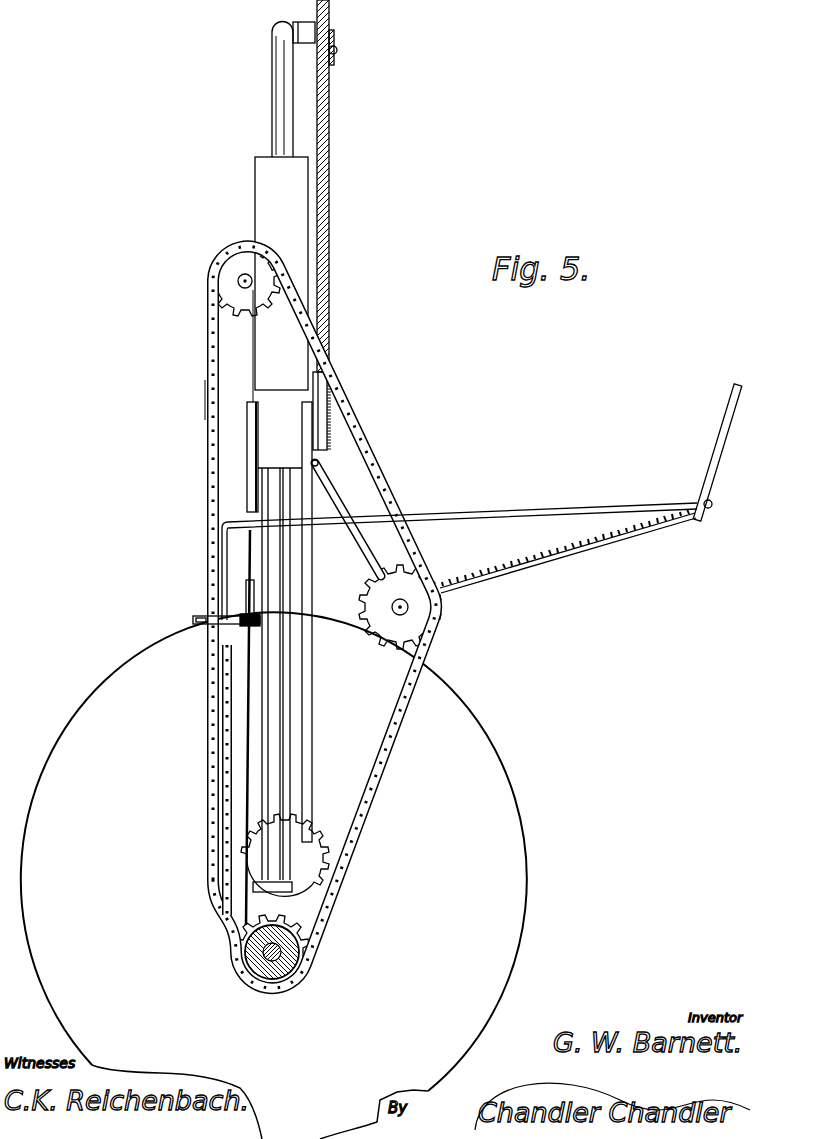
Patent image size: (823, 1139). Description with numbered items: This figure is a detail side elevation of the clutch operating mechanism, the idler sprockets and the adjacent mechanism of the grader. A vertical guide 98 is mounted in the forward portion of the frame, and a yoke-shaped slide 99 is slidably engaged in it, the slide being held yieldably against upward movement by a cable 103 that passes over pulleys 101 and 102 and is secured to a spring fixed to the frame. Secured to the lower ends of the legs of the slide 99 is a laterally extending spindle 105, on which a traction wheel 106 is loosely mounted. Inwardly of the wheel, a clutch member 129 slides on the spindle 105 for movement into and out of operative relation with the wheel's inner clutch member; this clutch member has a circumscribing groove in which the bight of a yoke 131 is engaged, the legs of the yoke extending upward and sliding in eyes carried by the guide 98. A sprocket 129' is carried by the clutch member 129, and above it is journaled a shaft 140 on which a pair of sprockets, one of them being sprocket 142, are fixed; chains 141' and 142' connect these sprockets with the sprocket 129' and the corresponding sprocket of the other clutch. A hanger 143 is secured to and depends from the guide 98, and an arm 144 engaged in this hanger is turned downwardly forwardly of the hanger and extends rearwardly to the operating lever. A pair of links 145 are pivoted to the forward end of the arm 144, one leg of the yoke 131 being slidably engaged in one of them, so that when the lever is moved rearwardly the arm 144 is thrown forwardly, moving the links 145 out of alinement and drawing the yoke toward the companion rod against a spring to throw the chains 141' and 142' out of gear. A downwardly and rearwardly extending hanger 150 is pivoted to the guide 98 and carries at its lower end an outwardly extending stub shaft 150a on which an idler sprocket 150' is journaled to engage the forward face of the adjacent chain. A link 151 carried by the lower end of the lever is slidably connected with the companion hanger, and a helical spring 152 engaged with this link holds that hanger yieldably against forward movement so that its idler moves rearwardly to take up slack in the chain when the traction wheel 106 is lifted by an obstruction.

The vertical guide 98 is at (292, 346).
The yoke-shaped slide 99 is at (285, 140).
The pulley 101 is at (334, 56).
The pulley 102 is at (330, 422).
The cable 103 is at (328, 252).
The spindle 105 is at (292, 896).
The traction wheel 106 is at (511, 848).
The clutch member 129 is at (320, 873).
The sprocket 129' is at (301, 840).
The yoke 131 is at (242, 718).
The shaft 140 is at (238, 283).
The chain 141' is at (284, 617).
The sprocket 142 is at (219, 298).
The chain 142' is at (180, 647).
The hanger 143 is at (247, 504).
The arm 144 is at (462, 508).
The links 145 is at (235, 618).
The hanger 150 is at (346, 519).
The stub shaft 150a is at (408, 607).
The idler sprocket 150' is at (424, 613).
The link 151 is at (600, 530).
The helical spring 152 is at (632, 522).